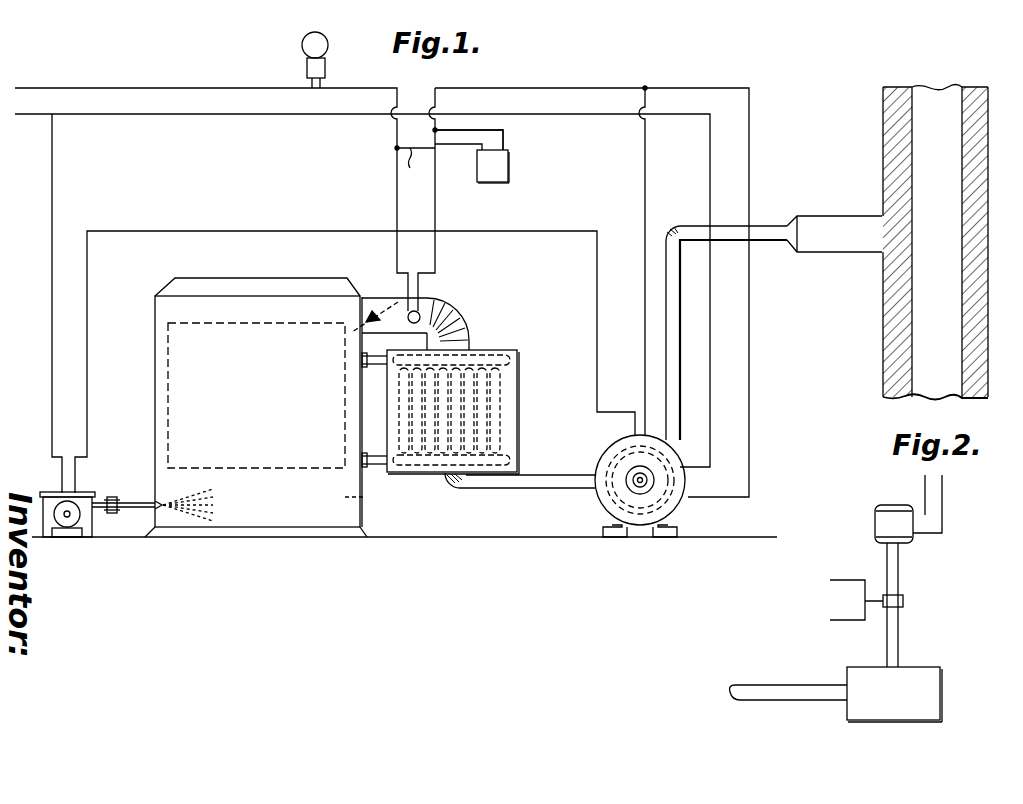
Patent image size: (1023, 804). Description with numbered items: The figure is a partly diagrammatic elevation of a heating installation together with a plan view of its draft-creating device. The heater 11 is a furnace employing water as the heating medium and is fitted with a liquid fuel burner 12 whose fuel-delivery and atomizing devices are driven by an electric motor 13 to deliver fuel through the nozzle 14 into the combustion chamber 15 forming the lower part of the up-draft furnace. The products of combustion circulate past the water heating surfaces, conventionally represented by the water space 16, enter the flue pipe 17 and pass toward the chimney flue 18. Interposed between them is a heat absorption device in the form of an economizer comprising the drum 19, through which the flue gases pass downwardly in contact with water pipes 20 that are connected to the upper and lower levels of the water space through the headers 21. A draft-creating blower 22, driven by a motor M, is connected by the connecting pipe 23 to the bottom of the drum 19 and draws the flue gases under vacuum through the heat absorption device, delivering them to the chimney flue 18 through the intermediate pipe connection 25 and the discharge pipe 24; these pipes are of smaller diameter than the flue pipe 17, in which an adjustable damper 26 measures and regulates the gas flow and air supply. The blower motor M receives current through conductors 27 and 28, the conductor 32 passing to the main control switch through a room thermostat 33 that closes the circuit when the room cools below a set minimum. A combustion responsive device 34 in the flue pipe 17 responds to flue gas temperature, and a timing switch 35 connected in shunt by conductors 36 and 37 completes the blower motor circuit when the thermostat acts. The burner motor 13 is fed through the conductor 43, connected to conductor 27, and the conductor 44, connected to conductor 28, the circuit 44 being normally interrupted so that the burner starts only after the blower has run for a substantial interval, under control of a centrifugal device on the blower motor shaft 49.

In FIG. 1, the heater 11 is at (154, 313).
In FIG. 1, the liquid fuel burner 12 is at (78, 496).
In FIG. 1, the electric motor 13 is at (80, 516).
In FIG. 1, the nozzle 14 is at (130, 501).
In FIG. 1, the combustion chamber 15 is at (366, 497).
In FIG. 1, the water space 16 is at (172, 378).
In FIG. 1, the flue pipe 17 is at (398, 298).
In FIG. 1, the chimney flue 18 is at (928, 315).
In FIG. 1, the drum 19 is at (520, 386).
In FIG. 1, the water pipes 20 is at (490, 418).
In FIG. 1, the headers 21 is at (483, 358).
In FIG. 1, the blower 22 is at (672, 508).
In FIG. 2, the blower 22 is at (923, 673).
In FIG. 1, the connecting pipe 23 is at (516, 489).
In FIG. 2, the connecting pipe 23 is at (818, 692).
In FIG. 1, the discharge pipe 24 is at (830, 220).
In FIG. 1, the intermediate pipe connection 25 is at (668, 351).
In FIG. 1, the damper 26 is at (354, 330).
In FIG. 1, the conductor 27 is at (217, 115).
In FIG. 2, the conductor 27 is at (924, 485).
In FIG. 1, the conductor 28 is at (560, 90).
In FIG. 2, the conductor 28 is at (943, 493).
In FIG. 1, the conductor 32 is at (214, 90).
In FIG. 1, the temperature responsive control device 33 is at (326, 66).
In FIG. 1, the combustion responsive device 34 is at (420, 313).
In FIG. 1, the timing switch 35 is at (510, 165).
In FIG. 1, the conductor 36 is at (505, 138).
In FIG. 1, the conductor 37 is at (414, 169).
In FIG. 1, the conductor 43 is at (53, 188).
In FIG. 1, the conductor 44 is at (218, 227).
In FIG. 2, the conductor 44 is at (861, 600).
In FIG. 2, the blower motor shaft 49 is at (899, 578).
In FIG. 2, the motor M is at (874, 522).